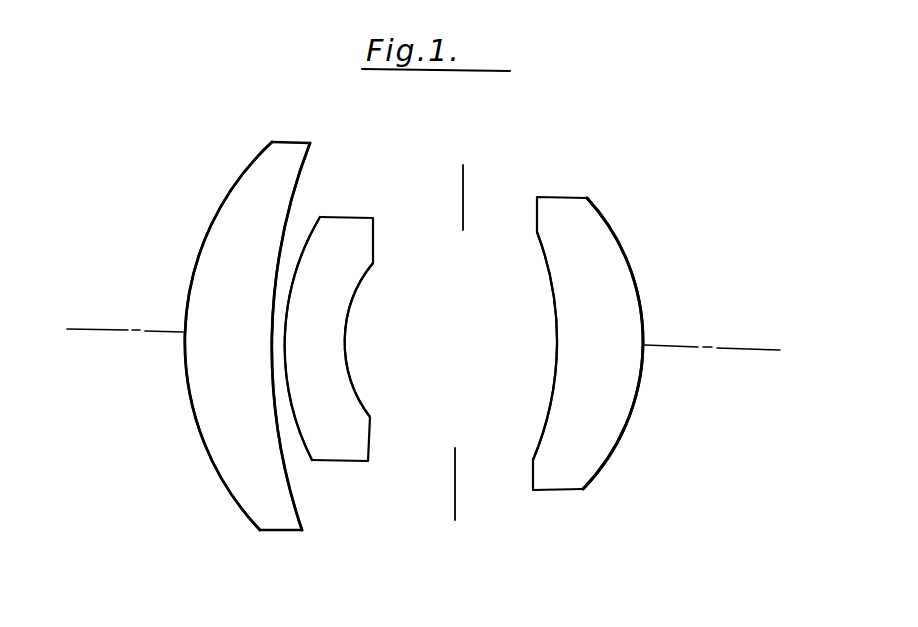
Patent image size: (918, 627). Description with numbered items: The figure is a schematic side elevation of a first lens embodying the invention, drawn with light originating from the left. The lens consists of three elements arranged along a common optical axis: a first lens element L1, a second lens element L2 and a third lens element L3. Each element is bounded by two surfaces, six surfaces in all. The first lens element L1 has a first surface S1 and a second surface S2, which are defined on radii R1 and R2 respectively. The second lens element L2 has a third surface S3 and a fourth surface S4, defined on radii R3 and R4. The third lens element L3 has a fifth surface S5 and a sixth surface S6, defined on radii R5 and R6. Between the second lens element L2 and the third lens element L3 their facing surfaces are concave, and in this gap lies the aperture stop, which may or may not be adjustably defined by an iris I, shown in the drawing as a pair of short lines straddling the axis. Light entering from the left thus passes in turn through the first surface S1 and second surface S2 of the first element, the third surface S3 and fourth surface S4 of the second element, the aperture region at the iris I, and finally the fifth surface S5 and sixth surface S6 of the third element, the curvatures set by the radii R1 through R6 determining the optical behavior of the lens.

The first lens element L1 is at (243, 318).
The second lens element L2 is at (344, 323).
The third lens element L3 is at (585, 327).
The iris I is at (463, 203).
The radius of first surface R1 is at (185, 335).
The radius of second surface R2 is at (275, 335).
The radius of third surface R3 is at (283, 343).
The radius of fourth surface R4 is at (345, 340).
The radius of fifth surface R5 is at (557, 338).
The radius of sixth surface R6 is at (643, 340).
The first surface S1 is at (197, 413).
The second surface S2 is at (290, 483).
The third surface S3 is at (302, 432).
The fourth surface S4 is at (360, 395).
The fifth surface S5 is at (542, 428).
The sixth surface S6 is at (628, 425).